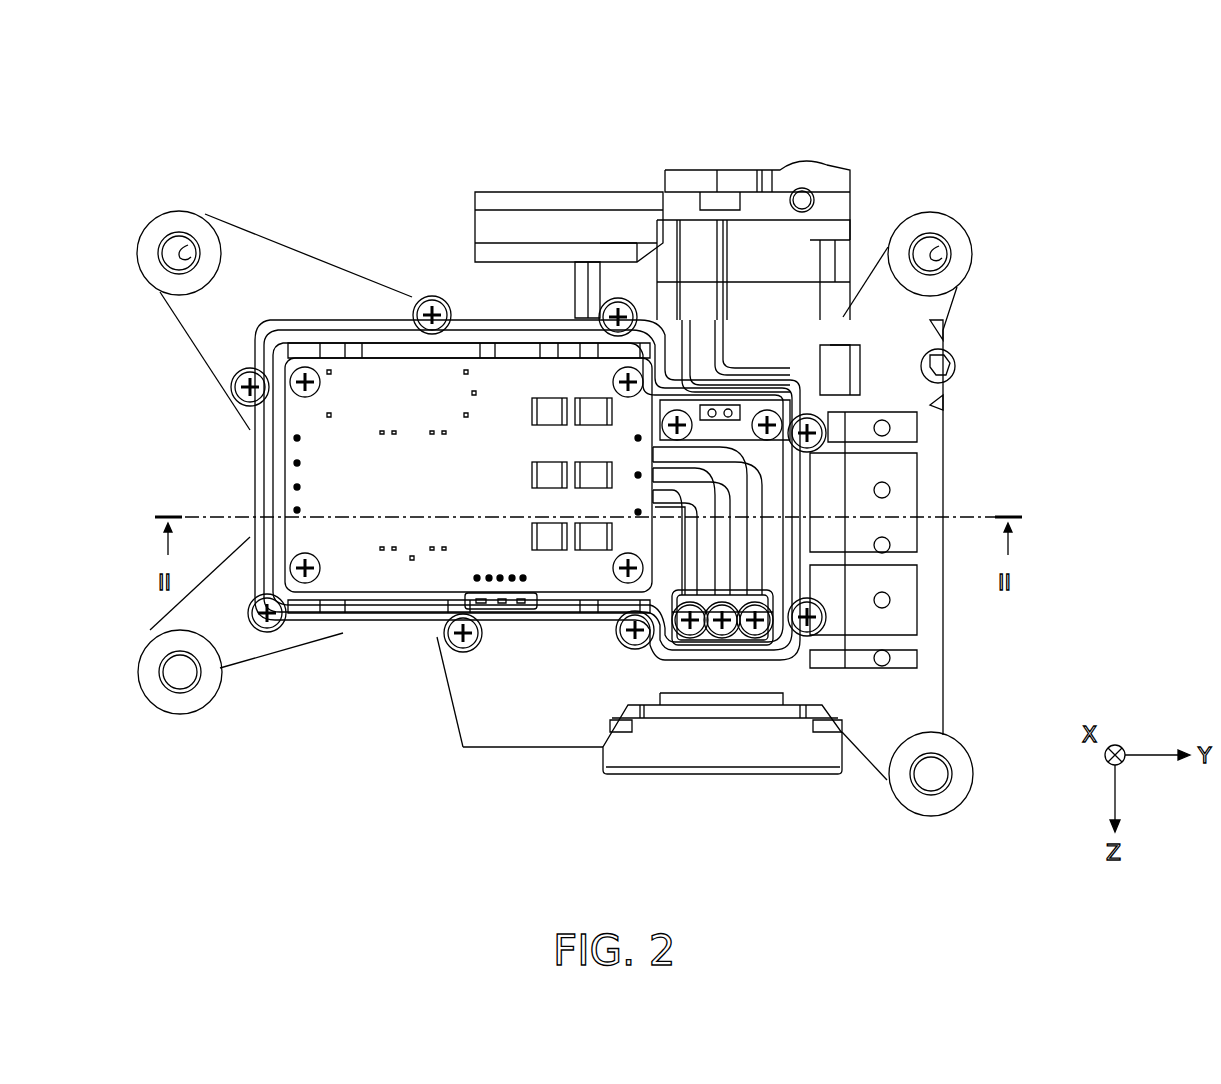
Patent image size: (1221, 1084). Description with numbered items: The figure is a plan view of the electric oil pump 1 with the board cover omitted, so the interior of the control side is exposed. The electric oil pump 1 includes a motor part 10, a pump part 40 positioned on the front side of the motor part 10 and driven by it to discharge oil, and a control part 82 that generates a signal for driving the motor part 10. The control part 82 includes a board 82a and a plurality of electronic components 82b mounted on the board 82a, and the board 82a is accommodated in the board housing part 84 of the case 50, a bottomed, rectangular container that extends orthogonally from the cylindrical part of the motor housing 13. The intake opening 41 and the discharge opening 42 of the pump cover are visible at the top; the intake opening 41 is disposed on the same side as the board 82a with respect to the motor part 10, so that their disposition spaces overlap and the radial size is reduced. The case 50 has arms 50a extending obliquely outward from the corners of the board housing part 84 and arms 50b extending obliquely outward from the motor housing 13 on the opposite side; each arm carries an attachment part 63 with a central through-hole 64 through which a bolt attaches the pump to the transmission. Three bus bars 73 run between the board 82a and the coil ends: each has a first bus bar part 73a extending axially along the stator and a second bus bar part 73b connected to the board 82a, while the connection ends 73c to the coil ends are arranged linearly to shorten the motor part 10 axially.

The electric oil pump 1 is at (983, 122).
The motor part 10 is at (786, 782).
The motor housing 13 is at (678, 705).
The pump part 40 is at (855, 242).
The intake opening 41 is at (470, 228).
The discharge opening 42 is at (736, 168).
The case 50 is at (370, 632).
The arm 50a is at (300, 282).
The arm 50b is at (925, 312).
The attachment part 63 is at (170, 223).
The through-hole 64 is at (190, 253).
The bus bar 73 is at (691, 562).
The first bus bar part 73a is at (757, 572).
The second bus bar part 73b is at (702, 455).
The connection end 73c is at (752, 640).
The control part 82 is at (498, 595).
The board 82a is at (342, 572).
The electronic component 82b is at (597, 548).
The board housing part 84 is at (400, 612).